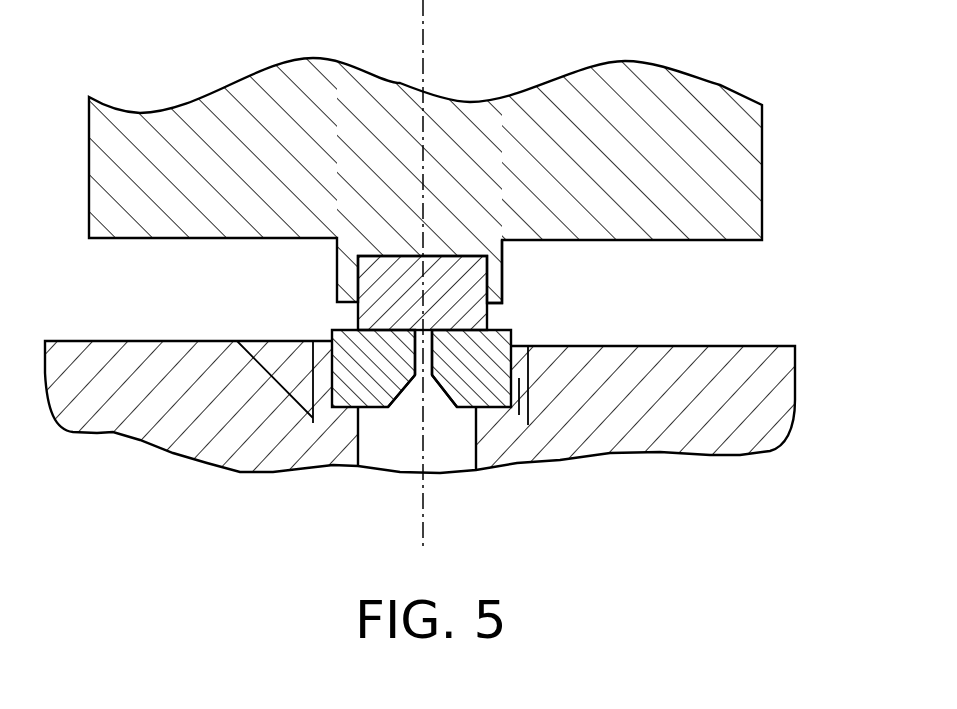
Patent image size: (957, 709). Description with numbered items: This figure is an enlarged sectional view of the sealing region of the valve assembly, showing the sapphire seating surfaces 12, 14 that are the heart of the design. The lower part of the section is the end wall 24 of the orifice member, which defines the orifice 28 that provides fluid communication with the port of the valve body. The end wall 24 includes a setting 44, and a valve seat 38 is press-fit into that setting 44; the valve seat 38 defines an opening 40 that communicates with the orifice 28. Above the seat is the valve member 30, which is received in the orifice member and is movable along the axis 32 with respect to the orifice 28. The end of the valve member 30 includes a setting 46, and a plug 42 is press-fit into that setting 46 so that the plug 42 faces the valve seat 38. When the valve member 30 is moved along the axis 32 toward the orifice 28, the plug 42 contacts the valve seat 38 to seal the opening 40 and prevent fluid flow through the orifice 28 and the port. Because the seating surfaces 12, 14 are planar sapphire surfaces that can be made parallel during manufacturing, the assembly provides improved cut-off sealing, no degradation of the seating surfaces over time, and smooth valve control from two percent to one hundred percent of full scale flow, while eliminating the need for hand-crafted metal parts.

The seating surface 12 is at (372, 343).
The seating surface 14 is at (461, 319).
The end wall 24 is at (757, 346).
The orifice 28 is at (477, 443).
The valve member 30 is at (763, 183).
The axis 32 is at (425, 0).
The valve seat 38 is at (532, 332).
The opening 40 is at (412, 386).
The plug 42 is at (393, 237).
The setting 44 is at (522, 373).
The setting 46 is at (503, 264).